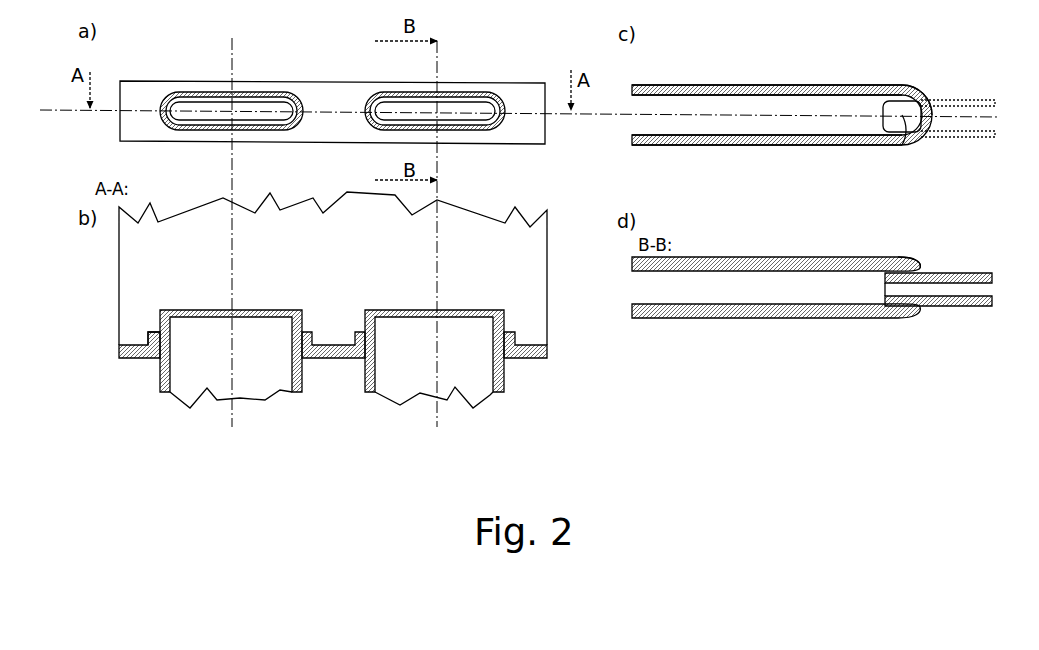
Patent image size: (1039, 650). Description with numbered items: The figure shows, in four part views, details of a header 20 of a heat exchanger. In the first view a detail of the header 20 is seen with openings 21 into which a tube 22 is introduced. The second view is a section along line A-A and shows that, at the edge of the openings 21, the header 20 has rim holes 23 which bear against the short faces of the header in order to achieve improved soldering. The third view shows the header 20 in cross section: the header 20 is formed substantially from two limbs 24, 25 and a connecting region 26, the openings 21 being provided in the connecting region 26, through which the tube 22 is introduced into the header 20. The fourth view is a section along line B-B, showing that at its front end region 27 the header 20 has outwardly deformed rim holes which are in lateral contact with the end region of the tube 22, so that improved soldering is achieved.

The header 20 is at (148, 81).
The openings 21 is at (262, 104).
The tube 22 is at (233, 100).
The rim holes 23 is at (148, 334).
The limb 24 is at (712, 87).
The limb 25 is at (743, 147).
The connecting region 26 is at (918, 90).
The front end region 27 is at (915, 258).